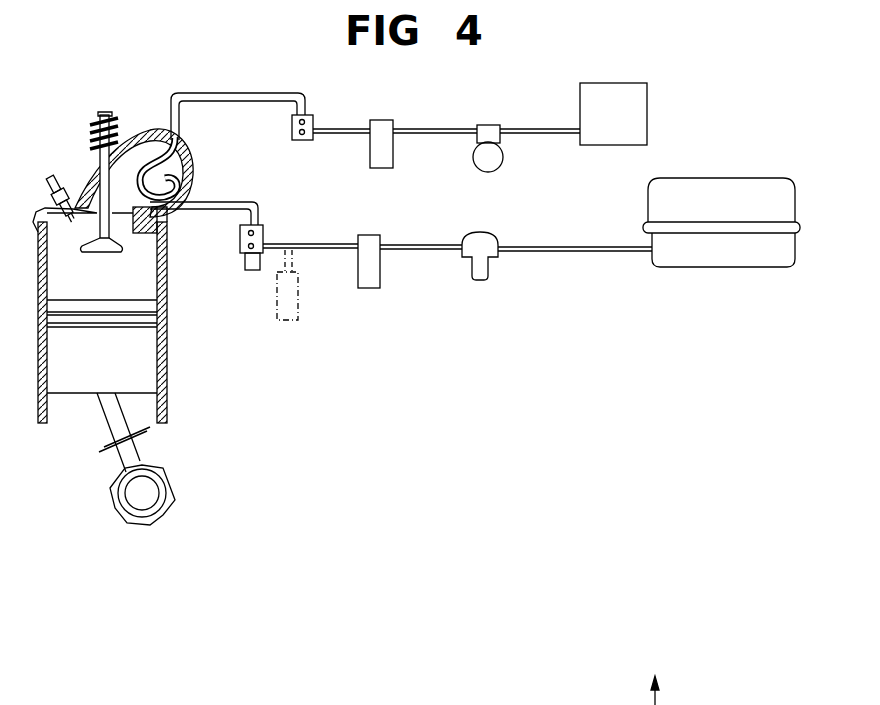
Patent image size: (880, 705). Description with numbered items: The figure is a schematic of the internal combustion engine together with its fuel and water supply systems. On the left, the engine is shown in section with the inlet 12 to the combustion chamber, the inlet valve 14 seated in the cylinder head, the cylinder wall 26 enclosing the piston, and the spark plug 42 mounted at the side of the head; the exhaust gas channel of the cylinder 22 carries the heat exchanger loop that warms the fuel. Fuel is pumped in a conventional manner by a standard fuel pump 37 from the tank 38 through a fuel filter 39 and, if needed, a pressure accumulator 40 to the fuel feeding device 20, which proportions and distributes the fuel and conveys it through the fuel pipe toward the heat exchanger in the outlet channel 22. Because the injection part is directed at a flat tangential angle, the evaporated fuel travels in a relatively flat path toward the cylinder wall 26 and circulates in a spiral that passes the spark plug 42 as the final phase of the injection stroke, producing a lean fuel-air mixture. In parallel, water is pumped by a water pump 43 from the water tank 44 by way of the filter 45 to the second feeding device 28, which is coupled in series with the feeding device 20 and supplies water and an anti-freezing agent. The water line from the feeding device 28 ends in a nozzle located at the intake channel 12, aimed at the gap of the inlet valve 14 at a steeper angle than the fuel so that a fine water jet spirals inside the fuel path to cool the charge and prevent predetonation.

The inlet to the combustion chamber 12 is at (142, 157).
The inlet valve 14 is at (100, 245).
The fuel feeding device 20 is at (267, 223).
The exhaust gas channel of the cylinder 22 is at (167, 242).
The cylinder wall 26 is at (138, 270).
The second feeding device 28 is at (312, 112).
The fuel pump 37 is at (482, 258).
The tank 38 is at (708, 250).
The fuel filter 39 is at (372, 268).
The pressure accumulator 40 is at (288, 290).
The spark plug 42 is at (58, 185).
The water pump 43 is at (488, 135).
The water tank 44 is at (637, 112).
The filter 45 is at (378, 133).